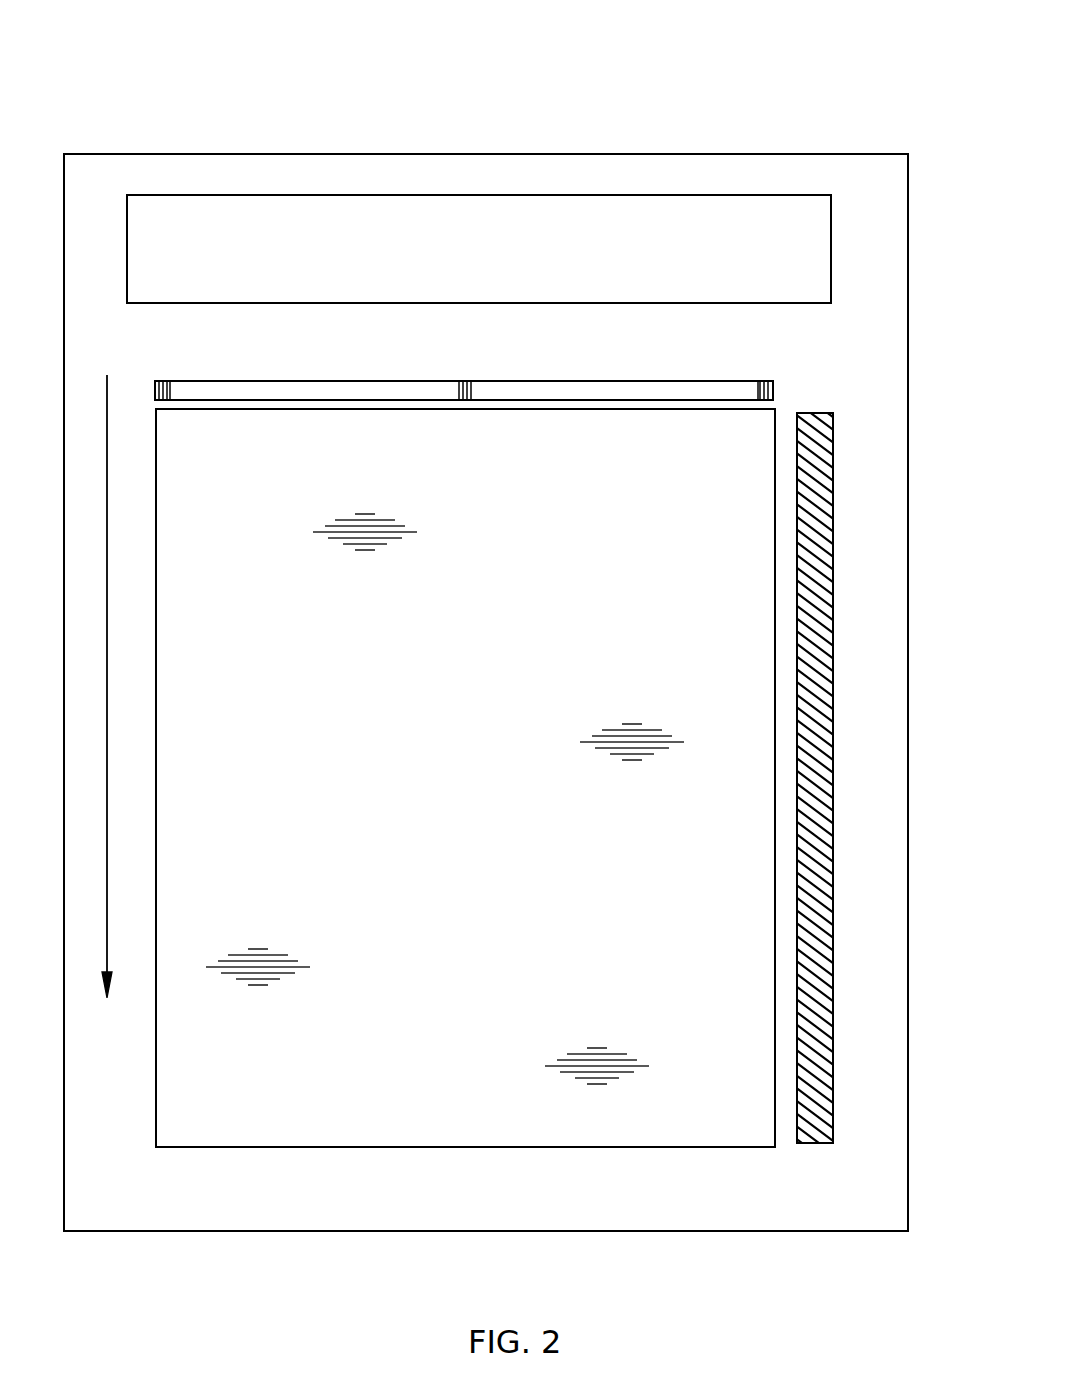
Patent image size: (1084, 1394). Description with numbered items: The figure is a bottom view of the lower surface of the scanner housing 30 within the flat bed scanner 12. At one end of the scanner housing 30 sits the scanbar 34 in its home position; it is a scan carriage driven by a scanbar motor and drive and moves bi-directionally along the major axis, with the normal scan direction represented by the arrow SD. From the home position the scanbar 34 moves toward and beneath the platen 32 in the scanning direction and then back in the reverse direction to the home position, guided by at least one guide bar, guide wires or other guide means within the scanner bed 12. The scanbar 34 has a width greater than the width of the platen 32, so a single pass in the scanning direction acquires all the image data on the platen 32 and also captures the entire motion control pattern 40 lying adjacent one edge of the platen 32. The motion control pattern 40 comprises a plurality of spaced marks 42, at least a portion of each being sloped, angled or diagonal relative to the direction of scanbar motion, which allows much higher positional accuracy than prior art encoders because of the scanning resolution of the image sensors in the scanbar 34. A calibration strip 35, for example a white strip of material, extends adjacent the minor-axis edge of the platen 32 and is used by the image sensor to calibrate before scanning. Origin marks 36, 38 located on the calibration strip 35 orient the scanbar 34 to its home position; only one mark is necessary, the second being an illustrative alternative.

The flat bed scanner 12 is at (793, 155).
The scanner housing 30 is at (889, 1112).
The platen 32 is at (483, 798).
The scanbar 34 is at (830, 234).
The calibration strip 35 is at (606, 381).
The origin mark 36 is at (170, 386).
The origin mark 38 is at (472, 388).
The motion control pattern 40 is at (828, 412).
The spaced marks 42 is at (833, 424).
The scan direction SD is at (107, 757).